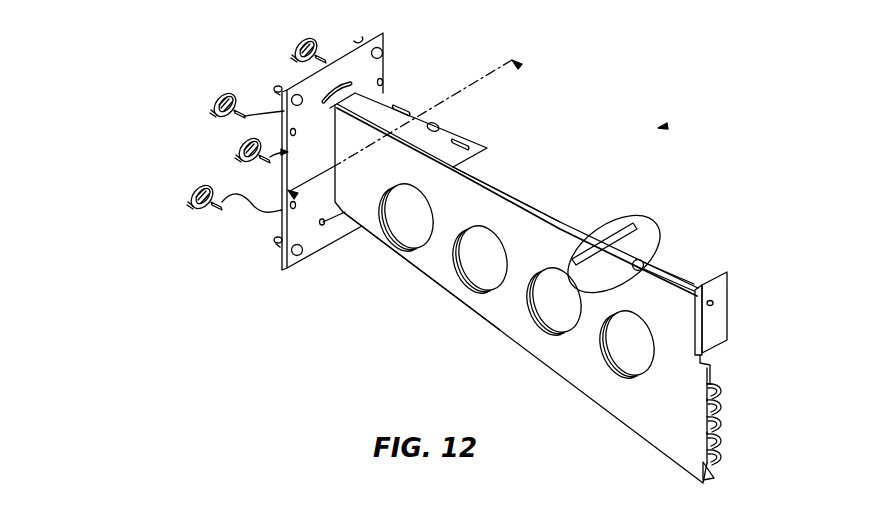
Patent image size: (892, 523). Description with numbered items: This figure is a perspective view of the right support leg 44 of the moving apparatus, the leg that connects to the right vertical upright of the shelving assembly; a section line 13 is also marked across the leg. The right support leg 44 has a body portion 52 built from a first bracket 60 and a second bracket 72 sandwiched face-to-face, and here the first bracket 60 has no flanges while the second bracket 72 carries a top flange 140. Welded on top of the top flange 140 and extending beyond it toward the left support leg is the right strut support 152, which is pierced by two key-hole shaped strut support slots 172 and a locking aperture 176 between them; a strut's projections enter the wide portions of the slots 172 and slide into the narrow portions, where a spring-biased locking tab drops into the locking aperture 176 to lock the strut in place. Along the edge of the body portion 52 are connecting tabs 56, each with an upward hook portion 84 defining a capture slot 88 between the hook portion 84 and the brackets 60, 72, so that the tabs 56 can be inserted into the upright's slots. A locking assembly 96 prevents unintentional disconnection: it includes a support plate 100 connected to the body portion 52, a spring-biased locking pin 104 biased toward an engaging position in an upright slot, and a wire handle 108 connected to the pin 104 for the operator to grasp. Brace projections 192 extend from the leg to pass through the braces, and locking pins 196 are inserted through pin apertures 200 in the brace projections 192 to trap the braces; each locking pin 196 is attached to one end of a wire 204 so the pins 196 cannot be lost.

The section line 13- 13 is at (296, 196).
The right support leg 44 is at (667, 126).
The body portion 52 is at (628, 408).
The connecting tabs 56 is at (726, 420).
The first bracket 60 is at (473, 293).
The second bracket 72 is at (708, 364).
The hook portion 84 is at (722, 392).
The capture slot 88 is at (707, 433).
The locking assembly 96 is at (714, 262).
The support plate 100 is at (714, 313).
The locking pin 104 is at (645, 261).
The wire handle 108 is at (608, 228).
The top flange 140 is at (502, 188).
The right strut support 152 is at (393, 100).
The strut support slots 172 is at (407, 104).
The locking aperture 176 is at (437, 124).
The brace projections 192 is at (277, 88).
The locking pins 196 is at (300, 40).
The pin apertures 200 is at (275, 93).
The wire 204 is at (260, 113).